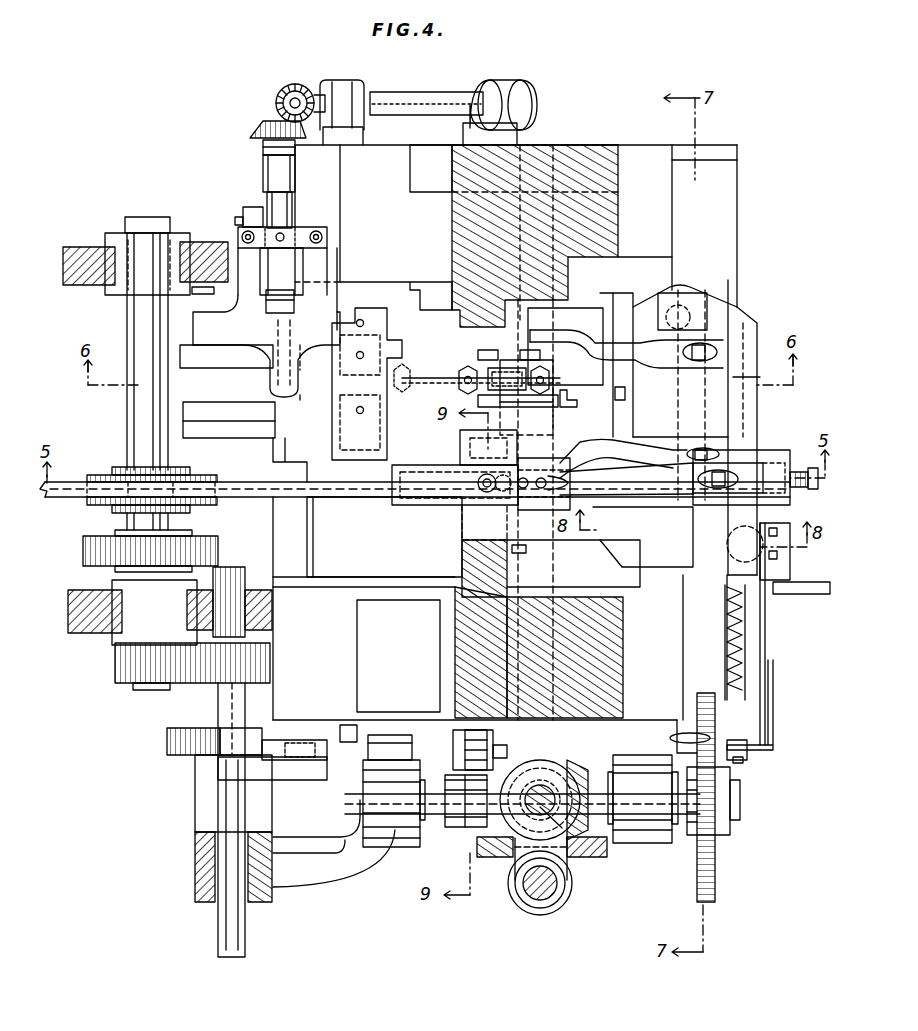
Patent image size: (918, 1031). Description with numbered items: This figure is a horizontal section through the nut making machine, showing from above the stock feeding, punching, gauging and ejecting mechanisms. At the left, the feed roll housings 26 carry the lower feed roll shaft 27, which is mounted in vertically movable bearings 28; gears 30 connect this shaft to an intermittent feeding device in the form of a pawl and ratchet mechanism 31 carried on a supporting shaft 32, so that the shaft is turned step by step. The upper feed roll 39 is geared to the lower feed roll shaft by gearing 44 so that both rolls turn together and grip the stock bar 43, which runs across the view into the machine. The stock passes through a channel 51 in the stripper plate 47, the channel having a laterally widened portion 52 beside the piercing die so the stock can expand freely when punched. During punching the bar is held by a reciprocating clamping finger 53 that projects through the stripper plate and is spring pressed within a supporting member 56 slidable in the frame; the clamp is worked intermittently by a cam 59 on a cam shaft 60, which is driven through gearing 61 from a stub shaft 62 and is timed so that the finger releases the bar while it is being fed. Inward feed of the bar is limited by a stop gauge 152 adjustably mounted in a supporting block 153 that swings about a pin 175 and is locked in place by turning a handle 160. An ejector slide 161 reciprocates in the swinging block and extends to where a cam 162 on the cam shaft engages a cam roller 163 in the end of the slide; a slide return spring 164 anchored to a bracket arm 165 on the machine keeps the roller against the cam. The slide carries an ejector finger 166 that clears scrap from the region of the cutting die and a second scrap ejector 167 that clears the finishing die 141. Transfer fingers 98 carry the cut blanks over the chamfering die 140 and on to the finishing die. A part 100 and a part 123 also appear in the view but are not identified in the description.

The feed roll housings 26 is at (75, 246).
The lower feed roll shaft 27 is at (132, 323).
The vertically movable bearings 28 is at (177, 240).
The gears 30 is at (200, 685).
The pawl and ratchet mechanism 31 is at (215, 758).
The supporting shaft 32 is at (225, 876).
The upper feed roll 39 is at (97, 471).
The stock bar 43 is at (230, 486).
The gearing 44 is at (218, 546).
The stripper plate 47 is at (476, 446).
The channel 51 is at (420, 498).
The laterally widened portion 52 is at (462, 471).
The reciprocating clamping finger 53 is at (462, 527).
The supporting member 56 is at (463, 722).
The cam 59 is at (475, 820).
The cam shaft 60 is at (437, 818).
The gearing 61 is at (558, 774).
The stub shaft 62 is at (585, 861).
The transfer fingers 98 is at (410, 362).
The arm 100 is at (320, 445).
The frame block 123 is at (590, 144).
The chamfering die 140 is at (486, 366).
The finishing die 141 is at (562, 397).
The stop gauge 152 is at (658, 492).
The supporting block 153 is at (733, 411).
The handle 160 is at (795, 594).
The ejector slide 161 is at (702, 640).
The cam 162 is at (717, 856).
The cam roller 163 is at (688, 658).
The slide return spring 164 is at (745, 668).
The bracket arm 165 is at (773, 723).
The ejector finger 166 is at (652, 446).
The second scrap ejector 167 is at (587, 340).
The pin 175 is at (700, 307).